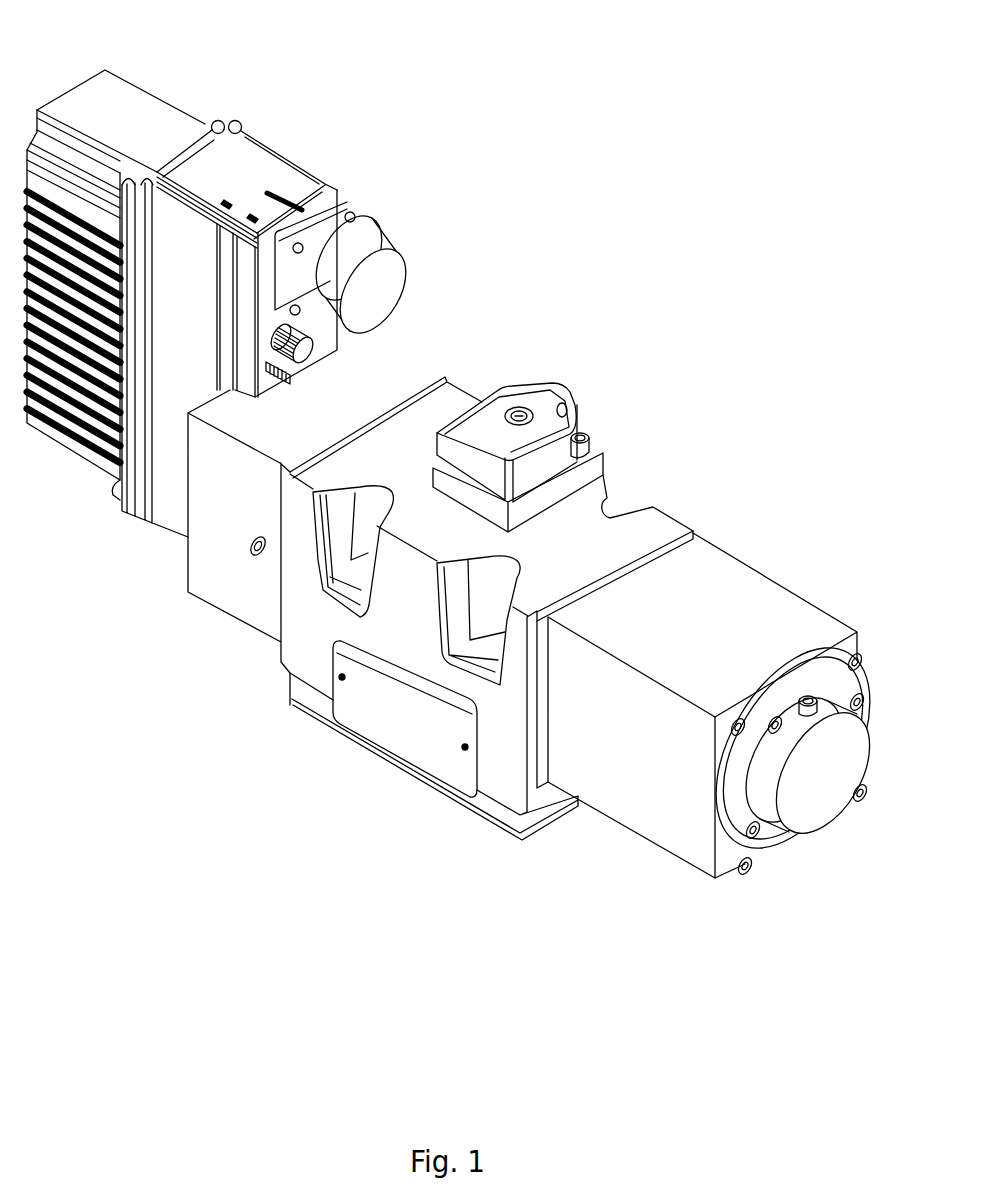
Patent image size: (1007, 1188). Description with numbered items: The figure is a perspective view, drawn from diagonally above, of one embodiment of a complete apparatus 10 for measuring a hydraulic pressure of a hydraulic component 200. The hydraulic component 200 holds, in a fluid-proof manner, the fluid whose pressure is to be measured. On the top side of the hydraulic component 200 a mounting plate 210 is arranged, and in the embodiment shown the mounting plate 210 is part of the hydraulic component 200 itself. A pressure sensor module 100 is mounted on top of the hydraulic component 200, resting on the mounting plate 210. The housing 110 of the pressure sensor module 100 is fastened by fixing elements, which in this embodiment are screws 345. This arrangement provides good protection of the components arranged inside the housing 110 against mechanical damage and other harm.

The apparatus 10 is at (808, 100).
The pressure sensor module 100 is at (557, 385).
The housing 110 is at (492, 418).
The hydraulic component 200 is at (658, 503).
The mounting plate 210 is at (343, 470).
The screws 345 is at (522, 407).